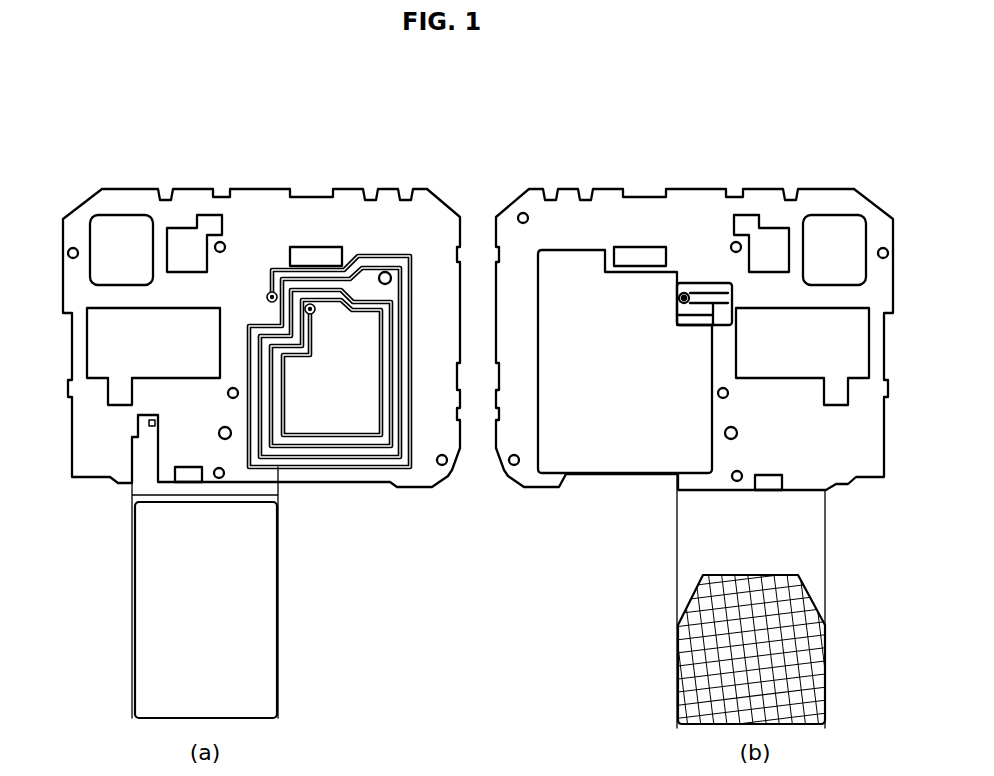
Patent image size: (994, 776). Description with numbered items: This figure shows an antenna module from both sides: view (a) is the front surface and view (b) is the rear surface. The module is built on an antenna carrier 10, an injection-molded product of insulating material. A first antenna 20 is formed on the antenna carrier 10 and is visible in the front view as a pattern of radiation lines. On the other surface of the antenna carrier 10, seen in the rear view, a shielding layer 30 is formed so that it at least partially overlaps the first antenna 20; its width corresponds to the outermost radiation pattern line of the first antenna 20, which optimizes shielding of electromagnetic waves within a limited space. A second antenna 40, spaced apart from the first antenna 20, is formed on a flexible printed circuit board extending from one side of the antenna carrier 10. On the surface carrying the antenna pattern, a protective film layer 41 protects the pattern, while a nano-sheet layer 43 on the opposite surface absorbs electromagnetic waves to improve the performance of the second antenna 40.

The antenna carrier 10 is at (254, 203).
The first antenna 20 is at (367, 470).
The shielding layer 30 is at (627, 452).
The second antenna 40 is at (142, 495).
The protective film layer 41 is at (167, 622).
The nano-sheet layer 43 is at (717, 670).